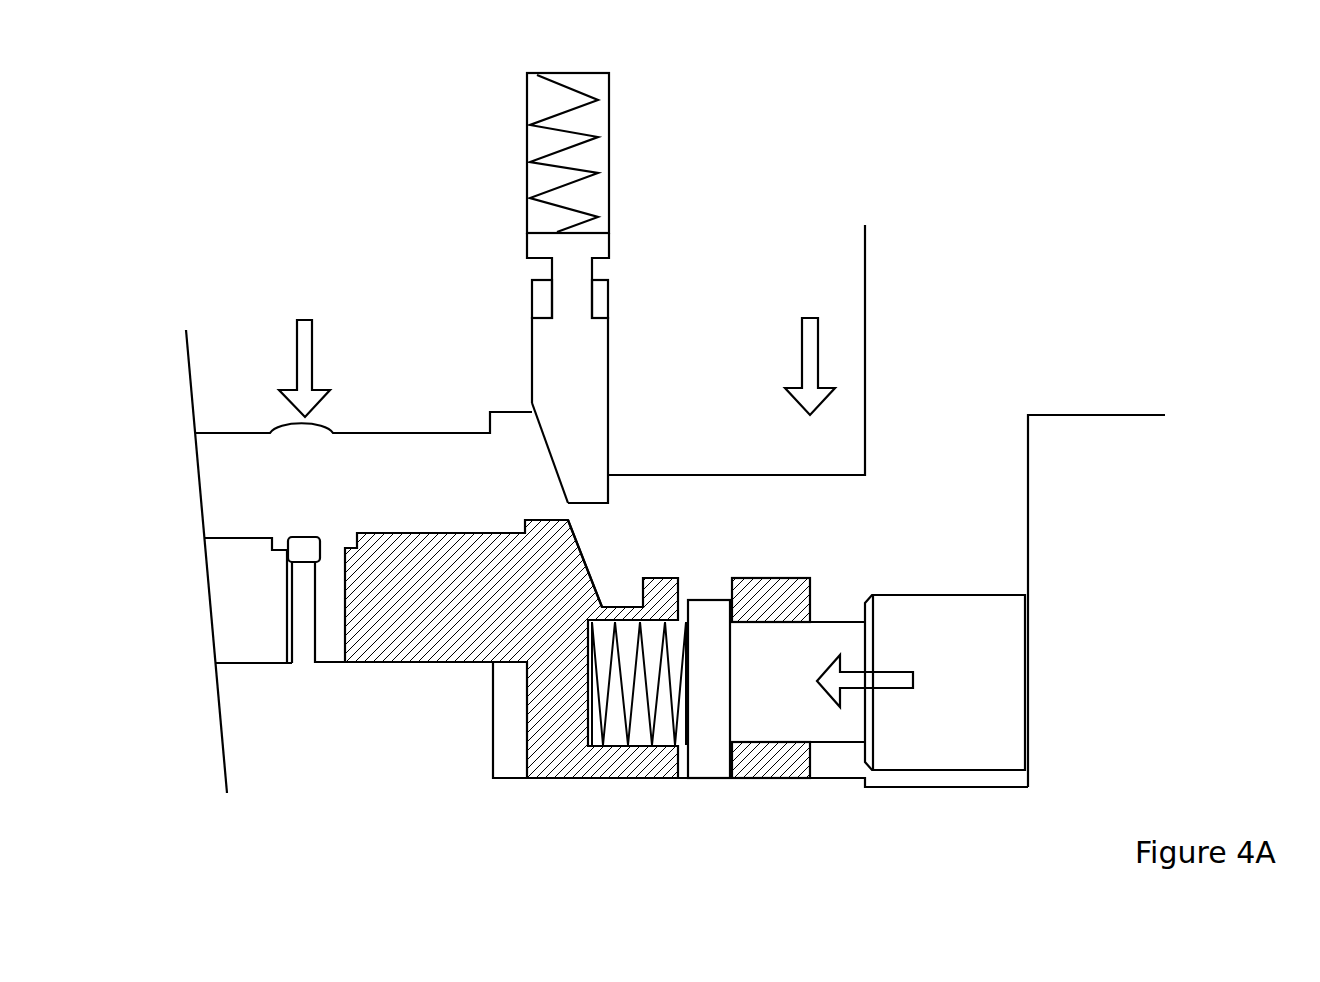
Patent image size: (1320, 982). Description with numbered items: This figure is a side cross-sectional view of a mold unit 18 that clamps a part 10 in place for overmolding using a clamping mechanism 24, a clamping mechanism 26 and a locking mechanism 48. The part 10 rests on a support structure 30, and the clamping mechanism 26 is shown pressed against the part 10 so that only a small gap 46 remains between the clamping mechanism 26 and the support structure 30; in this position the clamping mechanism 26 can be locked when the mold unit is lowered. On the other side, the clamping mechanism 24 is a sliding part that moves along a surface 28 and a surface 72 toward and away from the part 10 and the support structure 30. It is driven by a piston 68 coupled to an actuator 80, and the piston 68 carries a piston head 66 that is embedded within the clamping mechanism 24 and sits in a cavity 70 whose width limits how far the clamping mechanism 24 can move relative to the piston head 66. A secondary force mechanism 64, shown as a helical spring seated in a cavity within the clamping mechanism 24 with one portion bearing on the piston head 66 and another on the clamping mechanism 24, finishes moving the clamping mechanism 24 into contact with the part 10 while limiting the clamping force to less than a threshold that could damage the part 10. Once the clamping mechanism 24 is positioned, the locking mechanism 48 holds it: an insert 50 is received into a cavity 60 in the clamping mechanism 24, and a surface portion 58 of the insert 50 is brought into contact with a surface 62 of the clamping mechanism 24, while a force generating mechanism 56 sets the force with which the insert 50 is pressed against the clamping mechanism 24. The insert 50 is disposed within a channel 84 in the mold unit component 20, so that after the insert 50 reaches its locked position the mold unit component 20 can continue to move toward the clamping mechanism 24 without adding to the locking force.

The mold unit 18 is at (231, 88).
The force generating mechanism 56 is at (600, 137).
The locking mechanism 48 is at (637, 205).
The channel 84 is at (600, 293).
The mold unit component 20 is at (396, 373).
The insert 50 is at (558, 373).
The surface portion of insert 58 is at (548, 448).
The part 10 is at (305, 548).
The clamping mechanism 26 is at (241, 651).
The gap 46 is at (290, 607).
The support structure 30 is at (302, 625).
The clamping mechanism 24 is at (432, 612).
The surface 28 is at (455, 667).
The surface 62 is at (577, 558).
The cavity 60 is at (605, 580).
The surface 72 is at (568, 778).
The secondary force mechanism 64 is at (627, 730).
The piston head 66 is at (713, 695).
The cavity 70 is at (712, 588).
The piston 68 is at (760, 689).
The actuator 80 is at (953, 687).